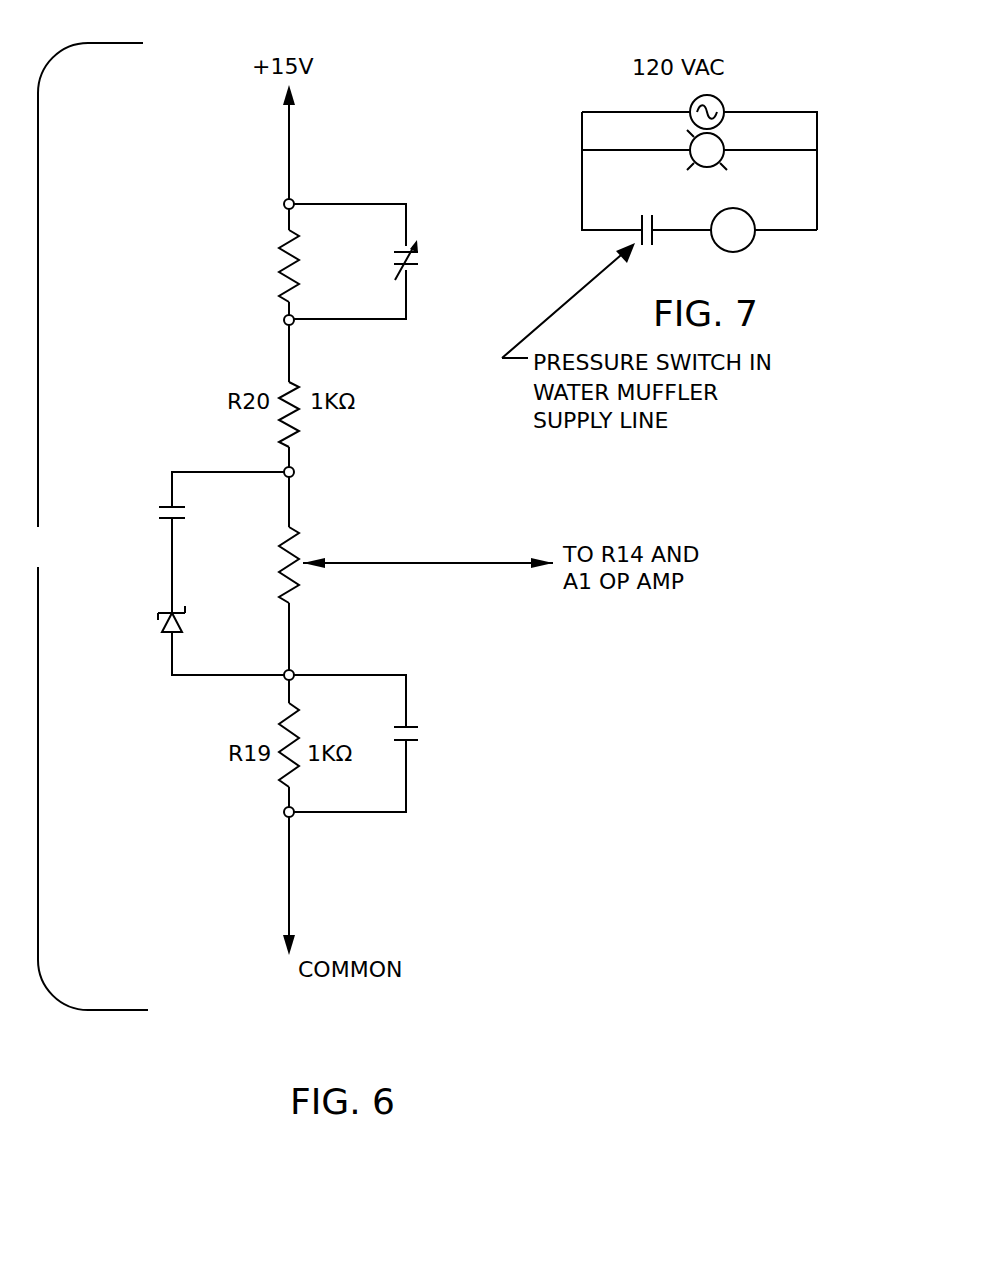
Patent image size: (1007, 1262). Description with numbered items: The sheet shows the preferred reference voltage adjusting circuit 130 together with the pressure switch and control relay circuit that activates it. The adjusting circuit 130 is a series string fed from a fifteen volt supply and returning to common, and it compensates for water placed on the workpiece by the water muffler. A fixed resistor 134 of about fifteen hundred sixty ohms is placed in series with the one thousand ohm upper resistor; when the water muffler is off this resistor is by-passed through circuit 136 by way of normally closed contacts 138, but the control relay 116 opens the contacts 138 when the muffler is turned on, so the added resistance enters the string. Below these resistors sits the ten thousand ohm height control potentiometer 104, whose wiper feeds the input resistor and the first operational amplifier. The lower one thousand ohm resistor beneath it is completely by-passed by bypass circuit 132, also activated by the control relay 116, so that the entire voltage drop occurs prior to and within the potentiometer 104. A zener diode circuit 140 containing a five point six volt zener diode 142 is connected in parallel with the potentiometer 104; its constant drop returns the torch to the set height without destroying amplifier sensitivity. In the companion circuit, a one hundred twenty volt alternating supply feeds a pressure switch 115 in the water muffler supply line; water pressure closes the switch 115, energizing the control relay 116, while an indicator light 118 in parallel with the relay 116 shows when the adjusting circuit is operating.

In FIG. 6, the adjusting circuit 130 is at (83, 526).
In FIG. 6, the fixed resistor 134 is at (287, 287).
In FIG. 6, the bypass circuit 136 is at (402, 252).
In FIG. 6, the normally closed contacts 138 is at (411, 270).
In FIG. 6, the height control potentiometer 104 is at (300, 548).
In FIG. 6, the bypass circuit 132 is at (408, 690).
In FIG. 6, the zener diode circuit 140 is at (172, 574).
In FIG. 6, the pressure switch 115 is at (168, 505).
In FIG. 7, the pressure switch 115 is at (647, 212).
In FIG. 6, the zener diode 142 is at (164, 632).
In FIG. 7, the indicator light 118 is at (720, 137).
In FIG. 7, the control relay 116 is at (754, 247).